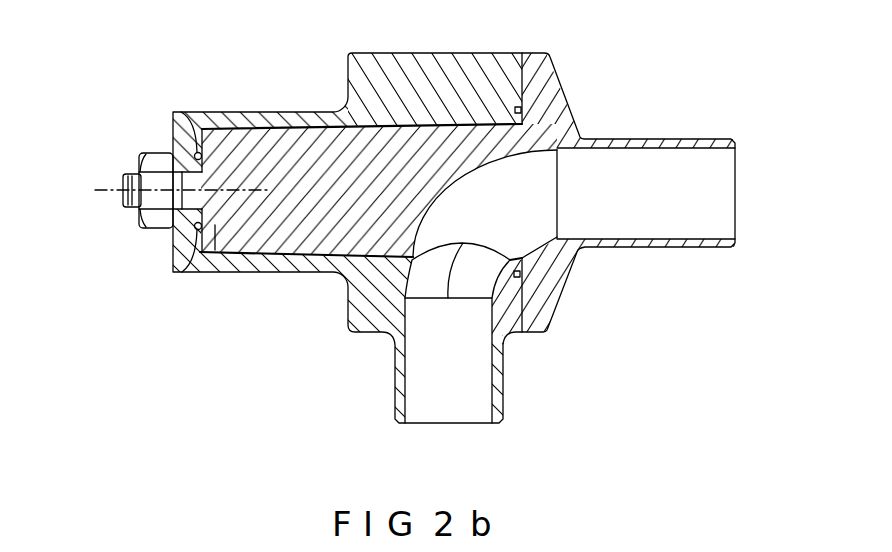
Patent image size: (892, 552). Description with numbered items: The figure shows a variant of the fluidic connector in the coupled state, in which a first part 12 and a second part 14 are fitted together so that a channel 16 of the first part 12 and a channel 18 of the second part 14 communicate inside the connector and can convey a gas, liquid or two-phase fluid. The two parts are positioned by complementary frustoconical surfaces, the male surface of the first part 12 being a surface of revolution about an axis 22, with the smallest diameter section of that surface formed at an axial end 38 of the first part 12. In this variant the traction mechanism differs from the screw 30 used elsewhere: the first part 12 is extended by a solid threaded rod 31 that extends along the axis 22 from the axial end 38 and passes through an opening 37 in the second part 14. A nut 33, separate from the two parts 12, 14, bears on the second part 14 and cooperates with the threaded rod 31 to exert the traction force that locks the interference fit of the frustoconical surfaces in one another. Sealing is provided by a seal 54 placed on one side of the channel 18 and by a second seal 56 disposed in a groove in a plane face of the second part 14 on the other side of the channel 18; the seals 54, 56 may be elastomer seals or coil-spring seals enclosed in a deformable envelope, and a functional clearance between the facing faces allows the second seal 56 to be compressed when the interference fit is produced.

The first part 12 is at (578, 101).
The second part 14 is at (432, 77).
The channel 16 is at (679, 205).
The channel 18 is at (461, 383).
The axis 22 is at (122, 190).
The screw 30 is at (228, 258).
The threaded rod 31 is at (127, 206).
The nut 33 is at (158, 218).
The opening 37 is at (182, 253).
The axial end 38 is at (205, 140).
The seal 54 is at (178, 123).
The second seal 56 is at (524, 112).